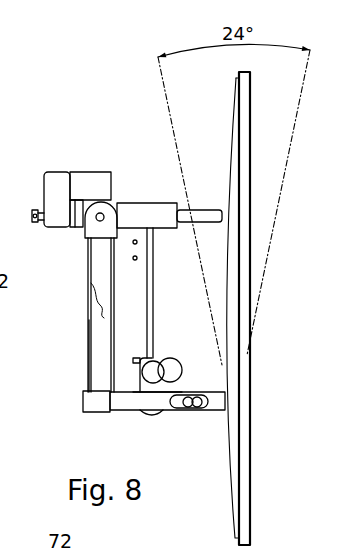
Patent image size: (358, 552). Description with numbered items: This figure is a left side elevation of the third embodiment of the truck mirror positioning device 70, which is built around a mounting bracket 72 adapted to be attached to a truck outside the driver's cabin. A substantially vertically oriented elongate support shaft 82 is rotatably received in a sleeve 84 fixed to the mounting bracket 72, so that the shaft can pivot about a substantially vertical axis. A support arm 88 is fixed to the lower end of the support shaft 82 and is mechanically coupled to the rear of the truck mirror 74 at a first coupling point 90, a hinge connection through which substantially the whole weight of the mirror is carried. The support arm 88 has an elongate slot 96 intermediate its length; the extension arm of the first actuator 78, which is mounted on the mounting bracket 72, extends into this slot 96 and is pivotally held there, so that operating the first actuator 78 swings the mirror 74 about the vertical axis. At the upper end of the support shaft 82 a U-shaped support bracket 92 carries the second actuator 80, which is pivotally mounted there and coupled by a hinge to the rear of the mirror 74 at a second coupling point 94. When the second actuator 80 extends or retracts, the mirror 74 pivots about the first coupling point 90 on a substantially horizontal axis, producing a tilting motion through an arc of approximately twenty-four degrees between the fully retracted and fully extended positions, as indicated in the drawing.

The truck mirror positioning device 70 is at (91, 110).
The mounting bracket 72 is at (150, 270).
The truck mirror 74 is at (252, 455).
The first actuator 78 is at (172, 338).
The second actuator 80 is at (123, 190).
The support shaft 82 is at (88, 265).
The sleeve 84 is at (88, 318).
The support arm 88 is at (120, 406).
The first coupling point 90 is at (215, 420).
The U-shaped support bracket 92 is at (84, 239).
The second coupling point 94 is at (218, 195).
The elongate slot 96 is at (199, 390).